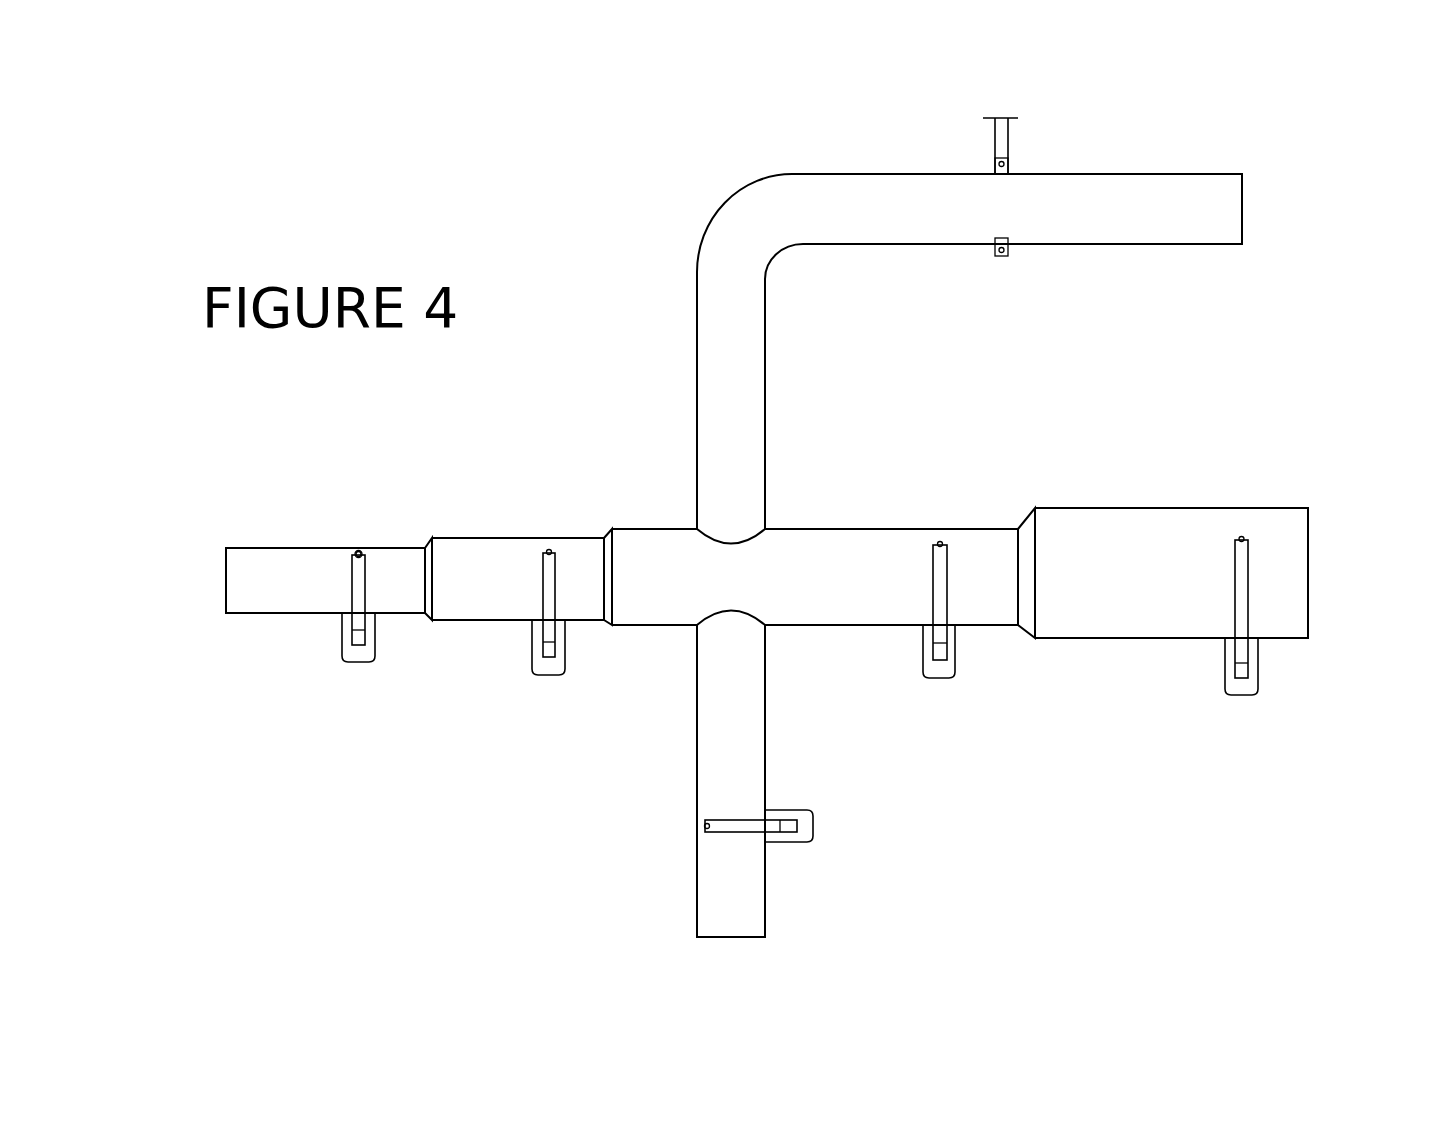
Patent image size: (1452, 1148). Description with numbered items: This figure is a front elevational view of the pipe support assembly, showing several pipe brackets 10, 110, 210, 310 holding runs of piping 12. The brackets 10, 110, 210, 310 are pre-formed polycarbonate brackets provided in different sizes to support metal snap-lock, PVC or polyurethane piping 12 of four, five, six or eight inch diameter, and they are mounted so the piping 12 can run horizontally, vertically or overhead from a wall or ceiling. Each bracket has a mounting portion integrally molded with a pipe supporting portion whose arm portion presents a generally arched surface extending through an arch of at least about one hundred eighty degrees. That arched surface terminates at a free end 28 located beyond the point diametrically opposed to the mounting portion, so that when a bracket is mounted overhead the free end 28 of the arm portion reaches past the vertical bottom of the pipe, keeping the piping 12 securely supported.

The pipe bracket 10 is at (1033, 142).
The piping 12 is at (850, 531).
The free end 28 is at (366, 562).
The pipe bracket 110 is at (545, 690).
The pipe bracket 210 is at (937, 692).
The pipe bracket 310 is at (1273, 682).